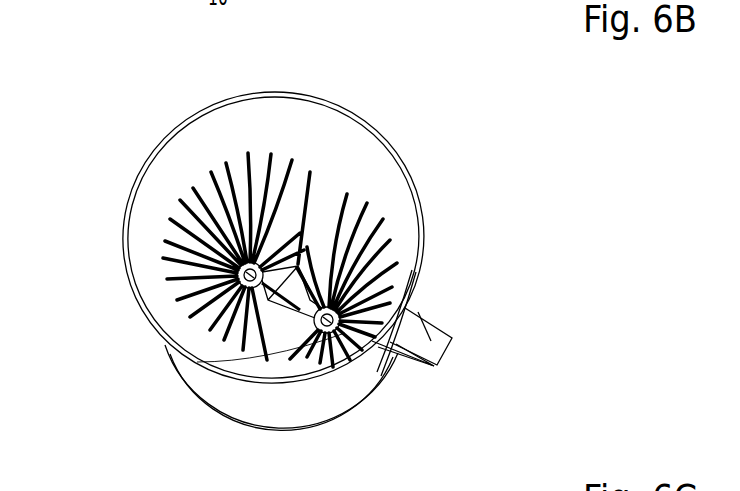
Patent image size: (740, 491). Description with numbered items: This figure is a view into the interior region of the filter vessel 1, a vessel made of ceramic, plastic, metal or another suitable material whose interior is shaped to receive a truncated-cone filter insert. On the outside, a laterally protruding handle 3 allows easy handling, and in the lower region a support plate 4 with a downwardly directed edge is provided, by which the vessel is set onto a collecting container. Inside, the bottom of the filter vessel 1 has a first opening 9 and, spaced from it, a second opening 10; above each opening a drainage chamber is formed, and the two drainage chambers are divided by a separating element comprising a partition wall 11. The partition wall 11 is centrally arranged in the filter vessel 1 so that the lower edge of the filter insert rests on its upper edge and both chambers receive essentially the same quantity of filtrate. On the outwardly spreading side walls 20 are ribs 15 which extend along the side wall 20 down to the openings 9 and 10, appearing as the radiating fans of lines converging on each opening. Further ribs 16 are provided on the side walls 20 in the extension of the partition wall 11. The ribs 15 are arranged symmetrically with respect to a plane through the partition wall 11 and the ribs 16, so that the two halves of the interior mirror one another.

The filter vessel 1 is at (220, 128).
The handle 3 is at (430, 338).
The support plate 4 is at (308, 398).
The first opening 9 is at (243, 275).
The second opening 10 is at (343, 327).
The partition wall 11 is at (305, 288).
The ribs 15 is at (228, 163).
The ribs 16 is at (329, 185).
The side wall 20 is at (357, 180).